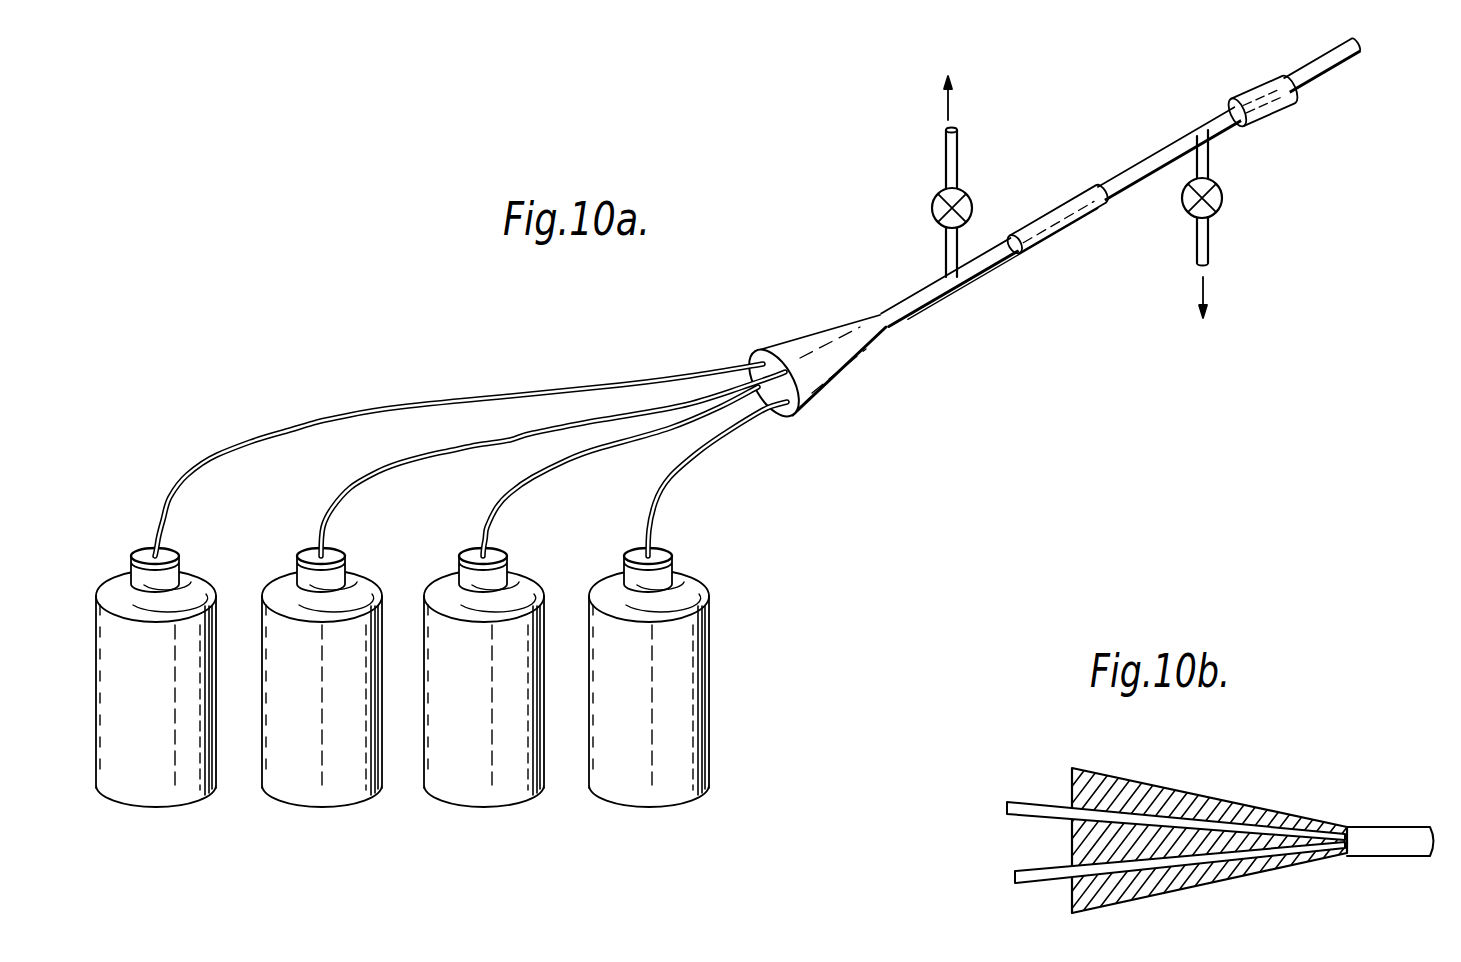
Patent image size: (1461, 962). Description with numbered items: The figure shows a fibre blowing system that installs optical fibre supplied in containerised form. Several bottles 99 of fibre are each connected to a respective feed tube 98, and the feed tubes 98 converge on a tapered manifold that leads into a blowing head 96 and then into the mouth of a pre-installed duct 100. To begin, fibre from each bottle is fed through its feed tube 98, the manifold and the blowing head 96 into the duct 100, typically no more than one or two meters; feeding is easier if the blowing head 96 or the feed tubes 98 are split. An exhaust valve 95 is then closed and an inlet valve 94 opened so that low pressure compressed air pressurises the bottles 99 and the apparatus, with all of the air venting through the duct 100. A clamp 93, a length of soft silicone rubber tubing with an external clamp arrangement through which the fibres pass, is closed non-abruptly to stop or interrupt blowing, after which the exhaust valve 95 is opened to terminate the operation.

The clamp 93 is at (1058, 206).
The inlet valve 94 is at (1222, 199).
The exhaust valve 95 is at (969, 200).
The blowing head 96 is at (1122, 183).
The feed tube 98 is at (676, 370).
The bottles 99 is at (198, 785).
The pre-installed duct 100 is at (1327, 72).